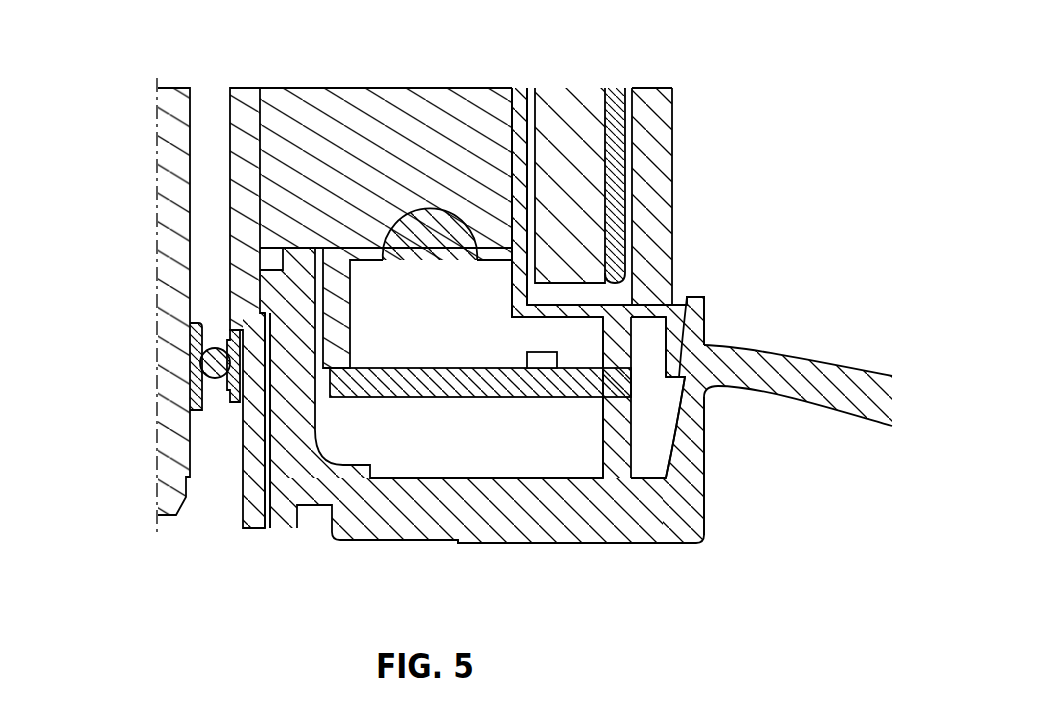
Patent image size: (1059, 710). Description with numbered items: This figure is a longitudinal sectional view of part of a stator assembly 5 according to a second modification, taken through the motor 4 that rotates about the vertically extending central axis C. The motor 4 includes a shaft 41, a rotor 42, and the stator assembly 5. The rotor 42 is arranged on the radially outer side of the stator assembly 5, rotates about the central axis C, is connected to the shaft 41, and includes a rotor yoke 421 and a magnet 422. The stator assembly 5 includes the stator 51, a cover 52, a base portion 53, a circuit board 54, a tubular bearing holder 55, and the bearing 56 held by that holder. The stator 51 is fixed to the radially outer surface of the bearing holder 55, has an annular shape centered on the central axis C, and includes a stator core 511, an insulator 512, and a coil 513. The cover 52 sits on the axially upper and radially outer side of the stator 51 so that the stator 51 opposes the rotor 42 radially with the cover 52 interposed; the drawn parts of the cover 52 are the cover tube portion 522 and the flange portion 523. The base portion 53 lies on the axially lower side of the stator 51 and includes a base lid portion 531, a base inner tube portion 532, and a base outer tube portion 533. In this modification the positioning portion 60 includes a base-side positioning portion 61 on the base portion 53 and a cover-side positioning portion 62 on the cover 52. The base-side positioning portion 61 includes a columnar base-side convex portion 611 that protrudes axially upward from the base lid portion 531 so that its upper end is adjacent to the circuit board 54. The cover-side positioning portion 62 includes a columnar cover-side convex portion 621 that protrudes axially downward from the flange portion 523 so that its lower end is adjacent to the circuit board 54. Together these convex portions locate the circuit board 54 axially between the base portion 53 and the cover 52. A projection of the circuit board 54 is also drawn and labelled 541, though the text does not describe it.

The central axis C is at (157, 103).
The motor 4 is at (120, 58).
The shaft 41 is at (172, 300).
The rotor 42 is at (678, 196).
The rotor yoke 421 is at (617, 152).
The magnet 422 is at (592, 116).
The stator assembly 5 is at (263, 73).
The stator 51 is at (91, 150).
The stator core 511 is at (270, 160).
The insulator 512 is at (290, 235).
The coil 513 is at (385, 245).
The cover 52 is at (529, 84).
The cover tube portion 522 is at (502, 140).
The flange portion 523 is at (587, 292).
The base portion 53 is at (243, 551).
The base lid portion 531 is at (541, 546).
The base inner tube portion 532 is at (281, 420).
The base outer tube portion 533 is at (685, 546).
The circuit board 54 is at (388, 398).
The projection of plate 541 is at (503, 398).
The bearing holder 55 is at (250, 430).
The bearing 56 is at (200, 382).
The positioning portion 60 is at (620, 355).
The base-side positioning portion 61 is at (645, 452).
The cover-side positioning portion 62 is at (647, 346).
The cover-side convex portion 621 is at (651, 407).
The base-side convex portion 611 is at (613, 478).